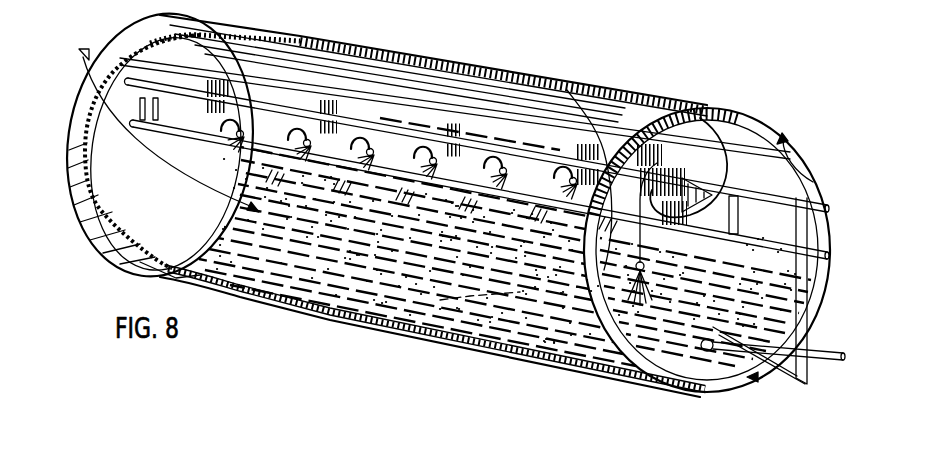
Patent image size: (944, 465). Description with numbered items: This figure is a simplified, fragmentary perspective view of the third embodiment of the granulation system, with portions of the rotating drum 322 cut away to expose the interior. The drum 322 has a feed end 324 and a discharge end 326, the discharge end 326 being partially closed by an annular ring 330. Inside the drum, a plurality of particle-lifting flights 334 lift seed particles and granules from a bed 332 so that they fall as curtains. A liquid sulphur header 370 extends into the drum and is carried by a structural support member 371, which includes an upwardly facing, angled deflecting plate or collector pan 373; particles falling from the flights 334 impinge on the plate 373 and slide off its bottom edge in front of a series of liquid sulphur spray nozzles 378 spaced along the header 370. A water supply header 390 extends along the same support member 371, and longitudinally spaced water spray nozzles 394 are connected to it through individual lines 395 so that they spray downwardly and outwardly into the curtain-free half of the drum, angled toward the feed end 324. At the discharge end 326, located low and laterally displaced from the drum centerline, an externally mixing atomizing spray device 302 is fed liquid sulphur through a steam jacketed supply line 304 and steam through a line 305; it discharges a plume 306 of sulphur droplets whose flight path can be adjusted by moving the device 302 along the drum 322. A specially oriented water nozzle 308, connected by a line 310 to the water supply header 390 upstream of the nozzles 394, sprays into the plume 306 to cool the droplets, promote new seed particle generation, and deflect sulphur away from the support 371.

The atomizing spray device 302 is at (700, 360).
The steam jacketed supply line 304 is at (807, 303).
The steam line 305 is at (826, 345).
The spray or plume 306 is at (494, 311).
The water nozzle 308 is at (678, 335).
The line 310 is at (547, 83).
The rotating drum 322 is at (635, 85).
The feed end 324 is at (84, 52).
The discharge end 326 is at (752, 378).
The annular ring 330 is at (745, 128).
The bed 332 is at (136, 144).
The particle-lifting flights 334 is at (186, 276).
The liquid sulphur header 370 is at (828, 247).
The structural support member 371 is at (734, 196).
The angled deflecting plate or collector pan 373 is at (701, 117).
The liquid sulphur spray nozzles 378 is at (463, 160).
The water supply header 390 is at (807, 154).
The water spray nozzles 394 is at (422, 162).
The individual lines 395 is at (358, 127).